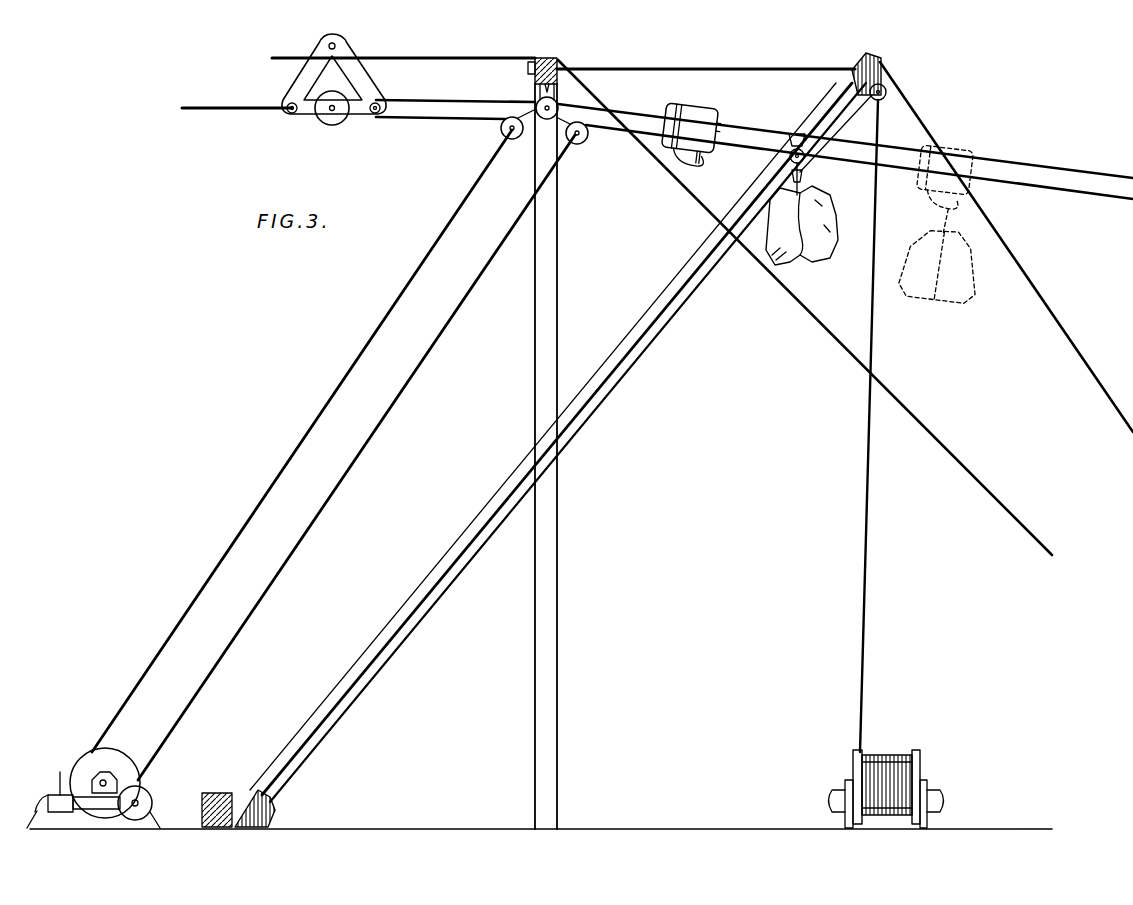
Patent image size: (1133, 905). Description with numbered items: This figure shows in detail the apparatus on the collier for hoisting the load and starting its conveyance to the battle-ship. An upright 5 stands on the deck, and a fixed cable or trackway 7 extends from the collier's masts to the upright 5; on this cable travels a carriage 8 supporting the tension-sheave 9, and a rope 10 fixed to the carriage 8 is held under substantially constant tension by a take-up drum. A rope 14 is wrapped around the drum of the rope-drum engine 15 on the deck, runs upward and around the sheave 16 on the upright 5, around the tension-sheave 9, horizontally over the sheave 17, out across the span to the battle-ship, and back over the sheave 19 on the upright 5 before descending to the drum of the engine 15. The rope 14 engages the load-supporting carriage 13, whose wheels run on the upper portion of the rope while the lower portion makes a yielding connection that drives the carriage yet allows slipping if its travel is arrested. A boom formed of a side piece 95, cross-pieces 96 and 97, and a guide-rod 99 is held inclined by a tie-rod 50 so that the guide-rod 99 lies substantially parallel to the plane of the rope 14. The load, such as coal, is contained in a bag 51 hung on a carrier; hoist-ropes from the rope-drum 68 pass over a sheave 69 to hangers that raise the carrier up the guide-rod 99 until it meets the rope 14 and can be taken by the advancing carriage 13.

The upright 5 is at (558, 60).
The fixed cable or trackway 7 is at (436, 60).
The carriage 8 is at (362, 84).
The tension-sheave 9 is at (338, 117).
The rope 10 is at (230, 109).
The load-supporting carriage 13 is at (826, 204).
The rope 14 is at (612, 440).
The rope-drum engine 15 is at (93, 778).
The sheave 16 is at (506, 131).
The sheave 17 is at (560, 110).
The sheave 19 is at (583, 143).
The tie-rod 50 is at (724, 70).
The bag 51 is at (818, 263).
The rope-drum 68 is at (913, 752).
The sheave 69 is at (887, 92).
The side piece 95 is at (610, 392).
The cross-piece 96 is at (268, 807).
The cross-piece 97 is at (856, 65).
The guide-rod 99 is at (665, 310).